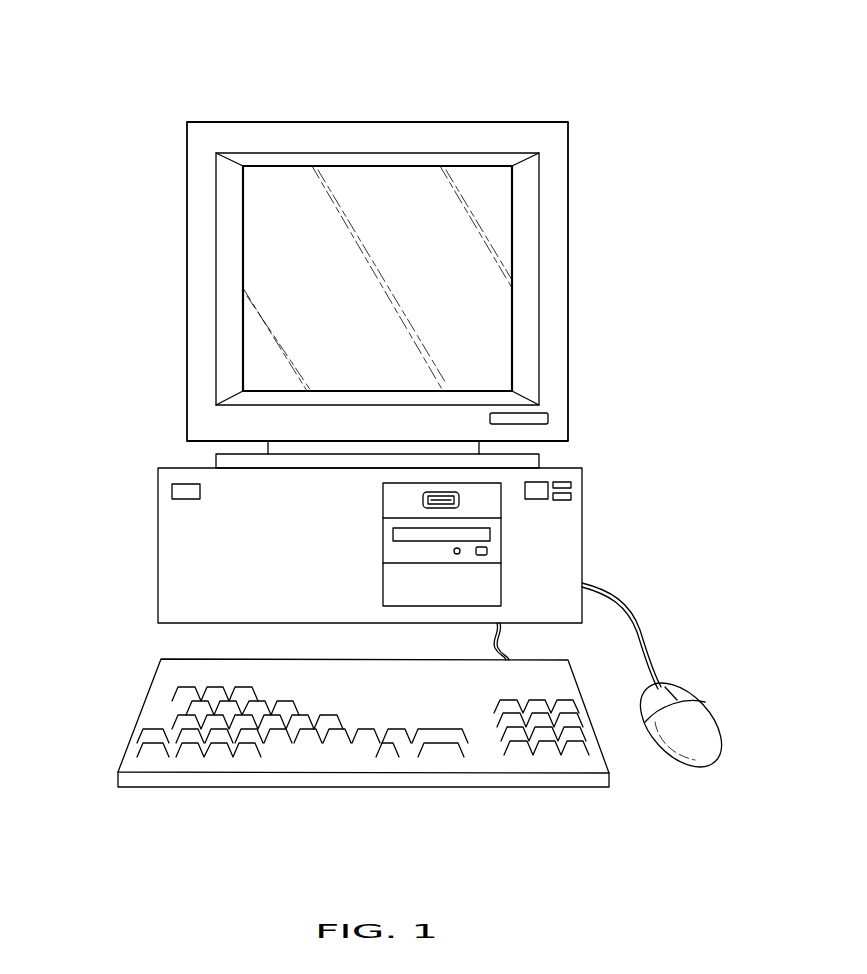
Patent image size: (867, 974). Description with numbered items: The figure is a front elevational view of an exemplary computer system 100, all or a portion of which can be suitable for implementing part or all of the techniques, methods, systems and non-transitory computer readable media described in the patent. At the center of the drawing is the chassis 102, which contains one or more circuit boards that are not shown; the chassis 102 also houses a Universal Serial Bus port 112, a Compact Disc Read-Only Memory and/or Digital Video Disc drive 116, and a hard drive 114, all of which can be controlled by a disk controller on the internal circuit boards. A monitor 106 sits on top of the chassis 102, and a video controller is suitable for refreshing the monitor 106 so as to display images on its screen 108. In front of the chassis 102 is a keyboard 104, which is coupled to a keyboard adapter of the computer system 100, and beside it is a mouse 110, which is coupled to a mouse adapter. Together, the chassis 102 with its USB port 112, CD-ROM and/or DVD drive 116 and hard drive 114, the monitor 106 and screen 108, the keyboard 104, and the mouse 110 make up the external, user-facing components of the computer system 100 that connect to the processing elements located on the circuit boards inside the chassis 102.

The computer system 100 is at (563, 94).
The chassis 102 is at (158, 548).
The keyboard 104 is at (140, 712).
The monitor 106 is at (263, 122).
The screen 108 is at (293, 283).
The mouse 110 is at (700, 718).
The Universal Serial Bus (USB) port 112 is at (462, 496).
The hard drive 114 is at (500, 583).
The Compact Disc Read-Only Memory (CD-ROM) and/or Digital Video Disc (DVD) drive 116 is at (500, 543).